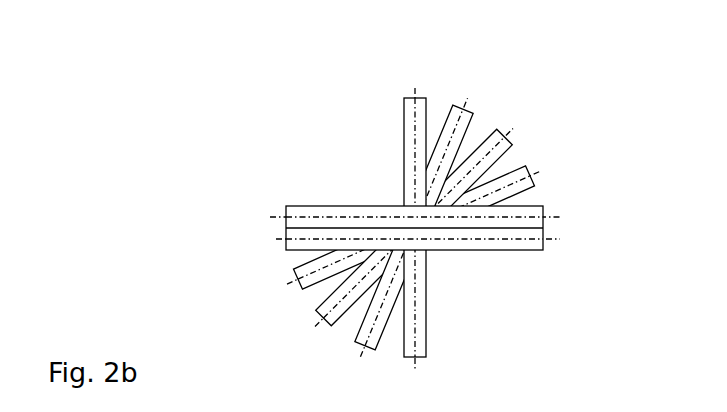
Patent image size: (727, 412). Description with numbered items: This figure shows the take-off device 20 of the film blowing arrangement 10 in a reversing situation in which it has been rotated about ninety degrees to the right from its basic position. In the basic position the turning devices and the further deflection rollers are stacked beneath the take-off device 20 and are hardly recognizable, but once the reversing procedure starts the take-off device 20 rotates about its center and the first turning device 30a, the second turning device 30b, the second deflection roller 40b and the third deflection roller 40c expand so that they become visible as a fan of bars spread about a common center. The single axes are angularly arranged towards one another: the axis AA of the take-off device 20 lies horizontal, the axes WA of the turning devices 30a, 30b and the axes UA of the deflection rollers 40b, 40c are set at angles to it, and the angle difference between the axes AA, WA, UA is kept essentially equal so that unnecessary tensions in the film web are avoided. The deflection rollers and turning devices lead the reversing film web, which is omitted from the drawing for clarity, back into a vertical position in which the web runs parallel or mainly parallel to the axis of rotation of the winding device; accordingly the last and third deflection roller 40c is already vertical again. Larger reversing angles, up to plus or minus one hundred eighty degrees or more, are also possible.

The arrangement 10 is at (394, 198).
The take-off device 20 is at (556, 228).
The first turning device 30a is at (535, 185).
The second turning device 30b is at (472, 111).
The second deflection roller 40b is at (509, 141).
The third deflection roller 40c is at (404, 112).
The axis of the take-off device AA is at (287, 220).
The axis of the deflection roller UA is at (415, 92).
The axis of the turning device WA is at (463, 108).